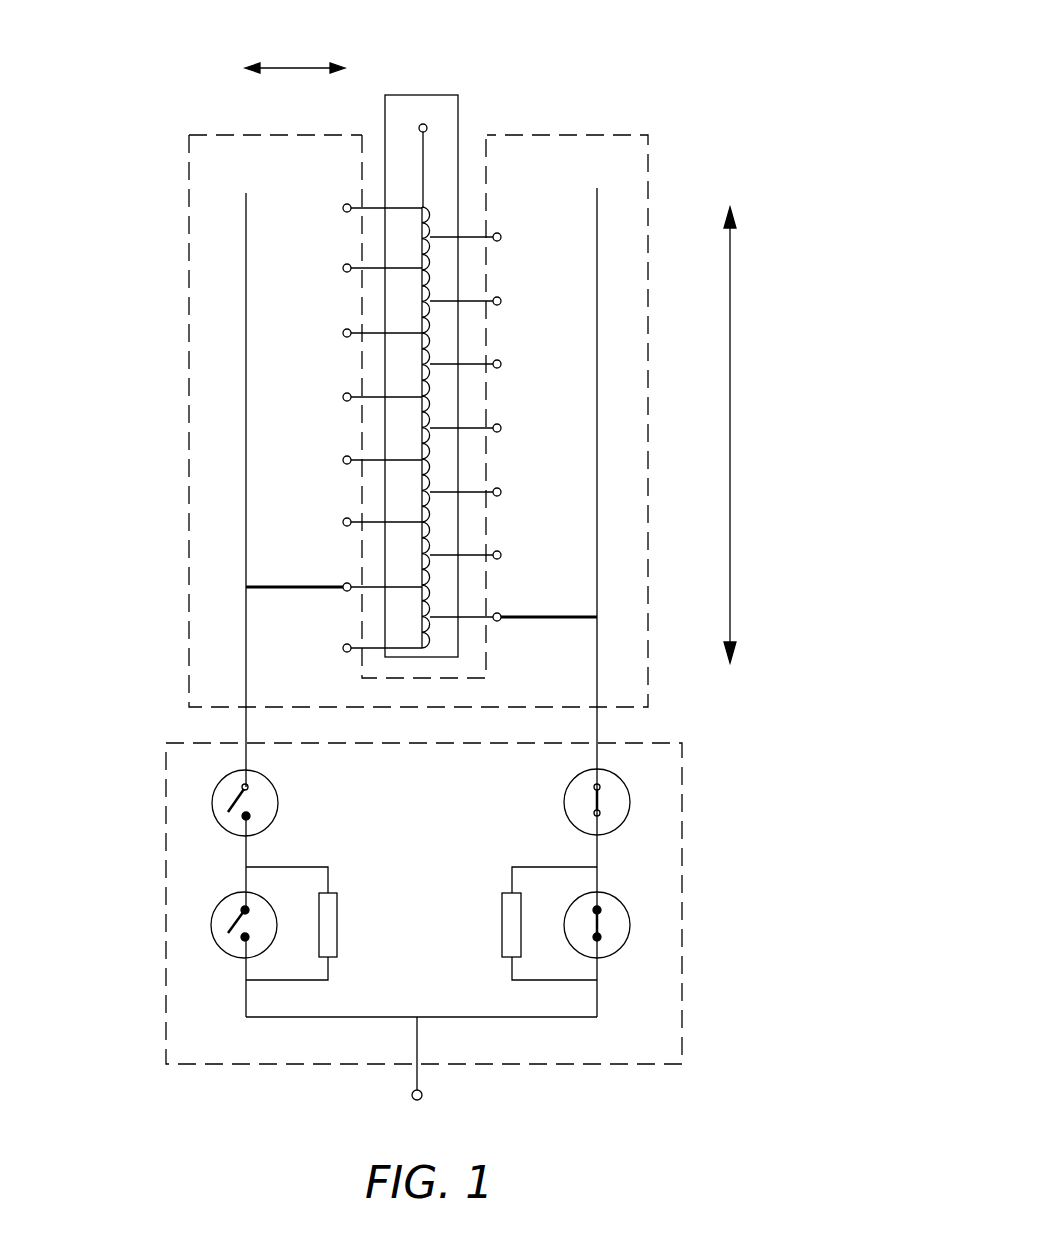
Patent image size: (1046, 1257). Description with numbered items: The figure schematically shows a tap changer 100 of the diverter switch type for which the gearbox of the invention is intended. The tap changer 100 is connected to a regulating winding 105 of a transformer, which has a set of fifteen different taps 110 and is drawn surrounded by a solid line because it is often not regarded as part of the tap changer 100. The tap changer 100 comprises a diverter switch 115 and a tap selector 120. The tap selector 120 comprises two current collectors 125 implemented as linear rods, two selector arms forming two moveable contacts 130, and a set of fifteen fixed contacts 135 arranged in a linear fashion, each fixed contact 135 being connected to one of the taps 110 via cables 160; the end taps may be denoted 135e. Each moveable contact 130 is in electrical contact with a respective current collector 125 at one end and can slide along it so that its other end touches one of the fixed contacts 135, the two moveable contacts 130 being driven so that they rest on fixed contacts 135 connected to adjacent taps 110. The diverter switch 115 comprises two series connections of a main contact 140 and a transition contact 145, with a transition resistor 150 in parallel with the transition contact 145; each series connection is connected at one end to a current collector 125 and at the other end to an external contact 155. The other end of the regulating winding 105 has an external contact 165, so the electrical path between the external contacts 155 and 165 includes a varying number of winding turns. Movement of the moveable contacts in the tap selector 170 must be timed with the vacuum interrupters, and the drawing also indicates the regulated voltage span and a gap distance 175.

The tap changer 100 is at (690, 157).
The regulating winding 105 is at (410, 95).
The taps 110 is at (420, 207).
The diverter switch 115 is at (682, 918).
The tap selector 120 is at (220, 135).
The current collectors 125 is at (247, 208).
The moveable contacts 130 is at (296, 587).
The fixed contacts 135 is at (345, 333).
The end taps 135e is at (343, 208).
The main contact 140 is at (278, 795).
The transition contact 145 is at (210, 930).
The transition resistor 150 is at (337, 922).
The external contact 155 is at (422, 1095).
The cables 160 is at (487, 213).
The external contact 165 is at (428, 127).
The tap selector 170 is at (730, 300).
The gap distance dgap 175 is at (270, 62).